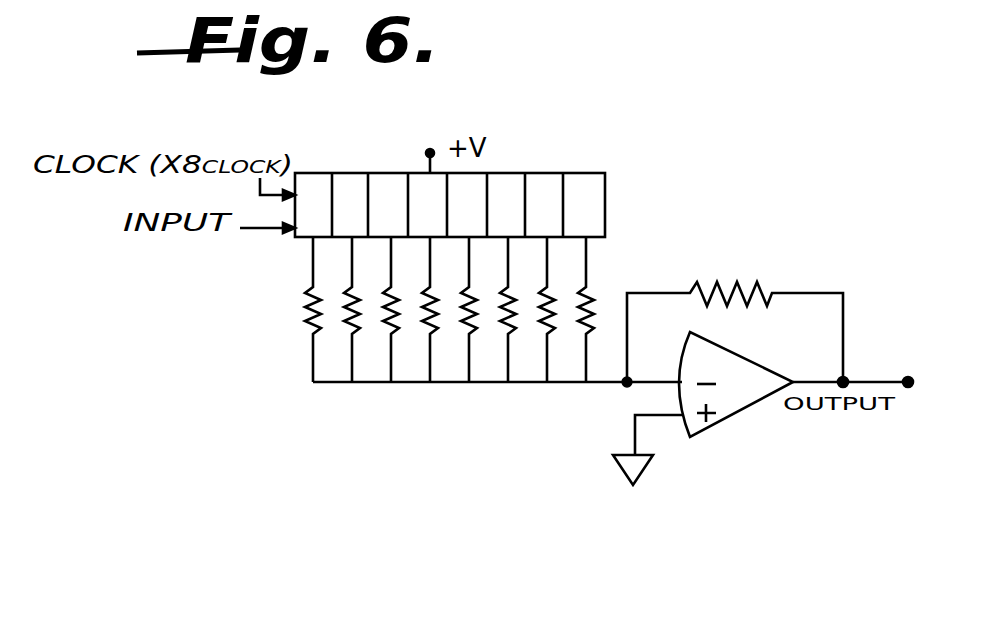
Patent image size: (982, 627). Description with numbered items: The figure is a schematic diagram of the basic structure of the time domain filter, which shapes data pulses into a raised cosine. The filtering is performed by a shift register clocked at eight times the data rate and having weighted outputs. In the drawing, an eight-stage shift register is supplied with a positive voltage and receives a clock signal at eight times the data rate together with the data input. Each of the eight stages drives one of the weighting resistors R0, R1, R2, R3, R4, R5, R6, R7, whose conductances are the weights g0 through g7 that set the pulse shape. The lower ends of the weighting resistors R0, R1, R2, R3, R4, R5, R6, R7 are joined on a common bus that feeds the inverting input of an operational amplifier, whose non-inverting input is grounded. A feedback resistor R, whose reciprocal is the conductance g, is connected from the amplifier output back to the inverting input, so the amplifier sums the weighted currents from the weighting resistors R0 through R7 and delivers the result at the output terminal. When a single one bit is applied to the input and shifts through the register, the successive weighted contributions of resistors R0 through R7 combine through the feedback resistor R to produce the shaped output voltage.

The weighting resistor R0 is at (291, 309).
The weighting resistor R1 is at (338, 309).
The weighting resistor R2 is at (378, 309).
The weighting resistor R3 is at (417, 309).
The weighting resistor R4 is at (457, 309).
The weighting resistor R5 is at (496, 309).
The weighting resistor R6 is at (534, 309).
The weighting resistor R7 is at (573, 309).
The feedback resistor R is at (735, 315).